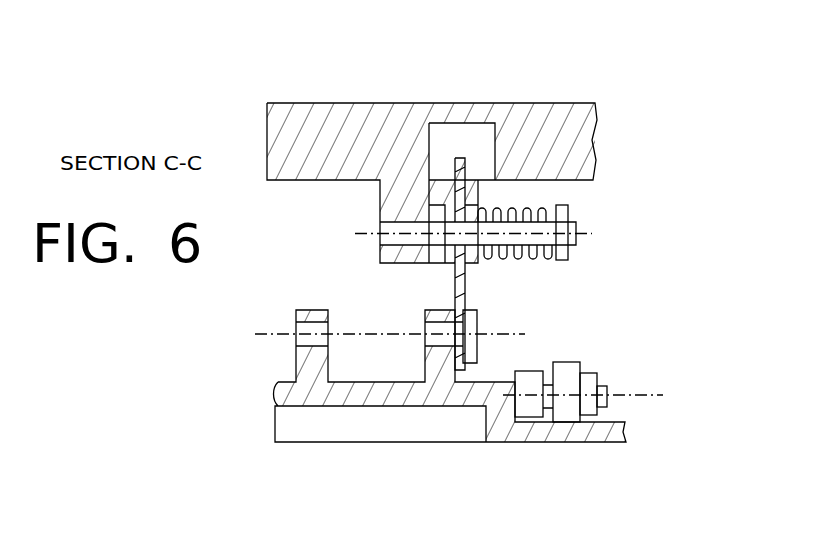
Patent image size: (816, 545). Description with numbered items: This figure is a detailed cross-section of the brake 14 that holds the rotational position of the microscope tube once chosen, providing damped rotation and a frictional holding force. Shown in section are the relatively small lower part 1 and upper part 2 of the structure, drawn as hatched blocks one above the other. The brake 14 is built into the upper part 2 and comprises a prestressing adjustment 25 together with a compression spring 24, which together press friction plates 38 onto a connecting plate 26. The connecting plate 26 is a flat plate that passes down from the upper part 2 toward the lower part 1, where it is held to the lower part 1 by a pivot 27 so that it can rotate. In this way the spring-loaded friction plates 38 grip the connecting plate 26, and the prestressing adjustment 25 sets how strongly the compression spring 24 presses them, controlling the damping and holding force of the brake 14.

The lower part 1 is at (495, 437).
The upper part 2 is at (556, 103).
The brake 14 is at (578, 245).
The compression spring 24 is at (511, 211).
The prestressing adjustment 25 is at (569, 208).
The connecting plate 26 is at (470, 292).
The pivot 27 is at (477, 337).
The friction plates 38 is at (475, 205).